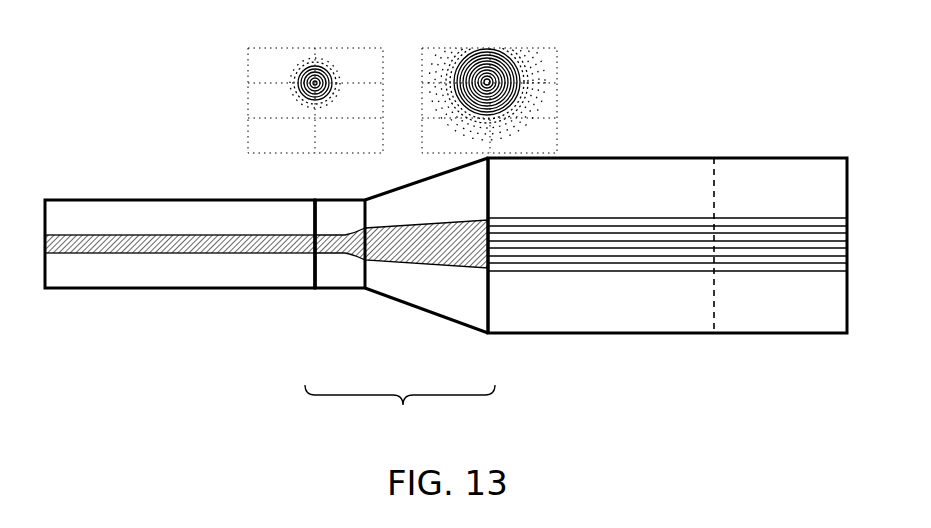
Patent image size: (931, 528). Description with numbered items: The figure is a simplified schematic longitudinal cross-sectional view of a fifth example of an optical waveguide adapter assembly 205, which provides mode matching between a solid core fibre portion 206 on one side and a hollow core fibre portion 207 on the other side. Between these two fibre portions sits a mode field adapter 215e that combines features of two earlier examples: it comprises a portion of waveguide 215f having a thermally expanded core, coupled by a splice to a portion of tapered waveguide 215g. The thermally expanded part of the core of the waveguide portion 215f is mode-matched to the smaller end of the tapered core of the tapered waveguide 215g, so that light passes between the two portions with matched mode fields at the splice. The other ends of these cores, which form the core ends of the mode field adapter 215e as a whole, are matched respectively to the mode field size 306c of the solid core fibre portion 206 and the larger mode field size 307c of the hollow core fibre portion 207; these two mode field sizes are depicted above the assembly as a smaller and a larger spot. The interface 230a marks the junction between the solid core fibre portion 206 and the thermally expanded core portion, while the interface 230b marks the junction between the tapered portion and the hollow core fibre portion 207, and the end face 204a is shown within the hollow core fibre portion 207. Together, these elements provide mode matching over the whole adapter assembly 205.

The adapter assembly 205 is at (104, 88).
The mode field size of solid core fibre portion 306c is at (290, 72).
The mode field size of hollow core fibre portion 307c is at (518, 62).
The first interface 230a is at (315, 200).
The second interface 230b is at (490, 158).
The solid core fibre portion 206 is at (145, 293).
The portion of waveguide with thermally expanded core 215f is at (347, 293).
The portion of tapered waveguide 215g is at (432, 315).
The mode field adapter 215e is at (400, 414).
The hollow core fibre portion 207 is at (605, 333).
The end face 204a is at (810, 333).